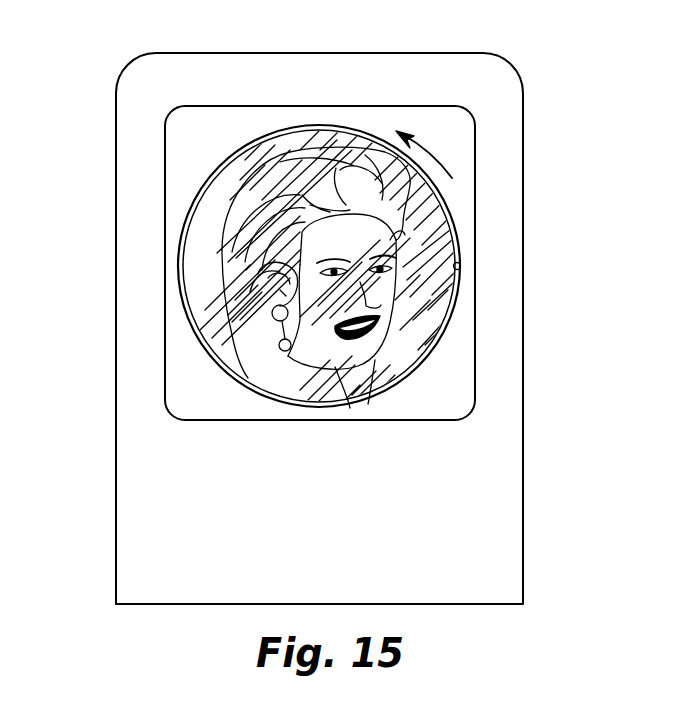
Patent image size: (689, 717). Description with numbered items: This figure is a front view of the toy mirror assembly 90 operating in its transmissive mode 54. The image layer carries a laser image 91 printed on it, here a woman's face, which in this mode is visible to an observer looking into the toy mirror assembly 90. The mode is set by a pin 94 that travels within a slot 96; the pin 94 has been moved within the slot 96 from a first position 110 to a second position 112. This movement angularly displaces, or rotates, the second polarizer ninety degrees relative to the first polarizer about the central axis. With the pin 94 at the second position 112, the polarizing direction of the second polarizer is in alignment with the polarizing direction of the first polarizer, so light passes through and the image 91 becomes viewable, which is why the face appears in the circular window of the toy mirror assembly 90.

The toy mirror assembly 90 is at (526, 51).
The transmissive mode 54 is at (77, 250).
The slot 96 is at (193, 328).
The pin 94 is at (462, 270).
The second position 112 is at (461, 266).
The first position 110 is at (325, 405).
The laser image 91 is at (380, 355).